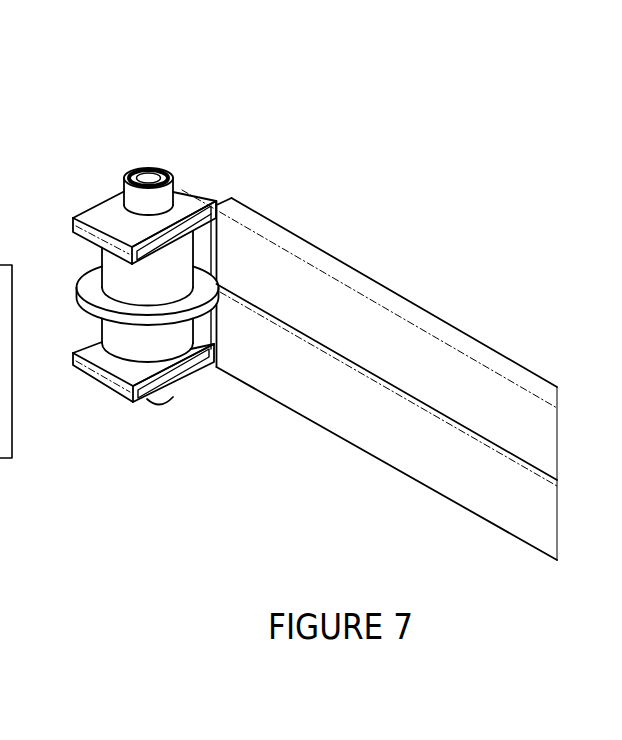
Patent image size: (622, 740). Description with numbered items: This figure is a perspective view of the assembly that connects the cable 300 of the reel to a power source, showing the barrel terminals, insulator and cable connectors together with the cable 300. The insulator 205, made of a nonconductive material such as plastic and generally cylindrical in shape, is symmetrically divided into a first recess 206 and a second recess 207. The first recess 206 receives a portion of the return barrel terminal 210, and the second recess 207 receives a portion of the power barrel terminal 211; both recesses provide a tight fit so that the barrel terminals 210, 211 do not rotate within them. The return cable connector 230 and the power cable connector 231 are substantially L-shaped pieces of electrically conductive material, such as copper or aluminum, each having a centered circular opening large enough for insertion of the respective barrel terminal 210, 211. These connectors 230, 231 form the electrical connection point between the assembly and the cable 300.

The cable 300 is at (340, 295).
The return cable connector 230 is at (108, 213).
The power cable connector 231 is at (124, 377).
The return barrel terminal 210 is at (166, 198).
The power barrel terminal 211 is at (165, 405).
The insulator 205 is at (110, 308).
The first recess 206 is at (125, 268).
The second recess 207 is at (137, 350).